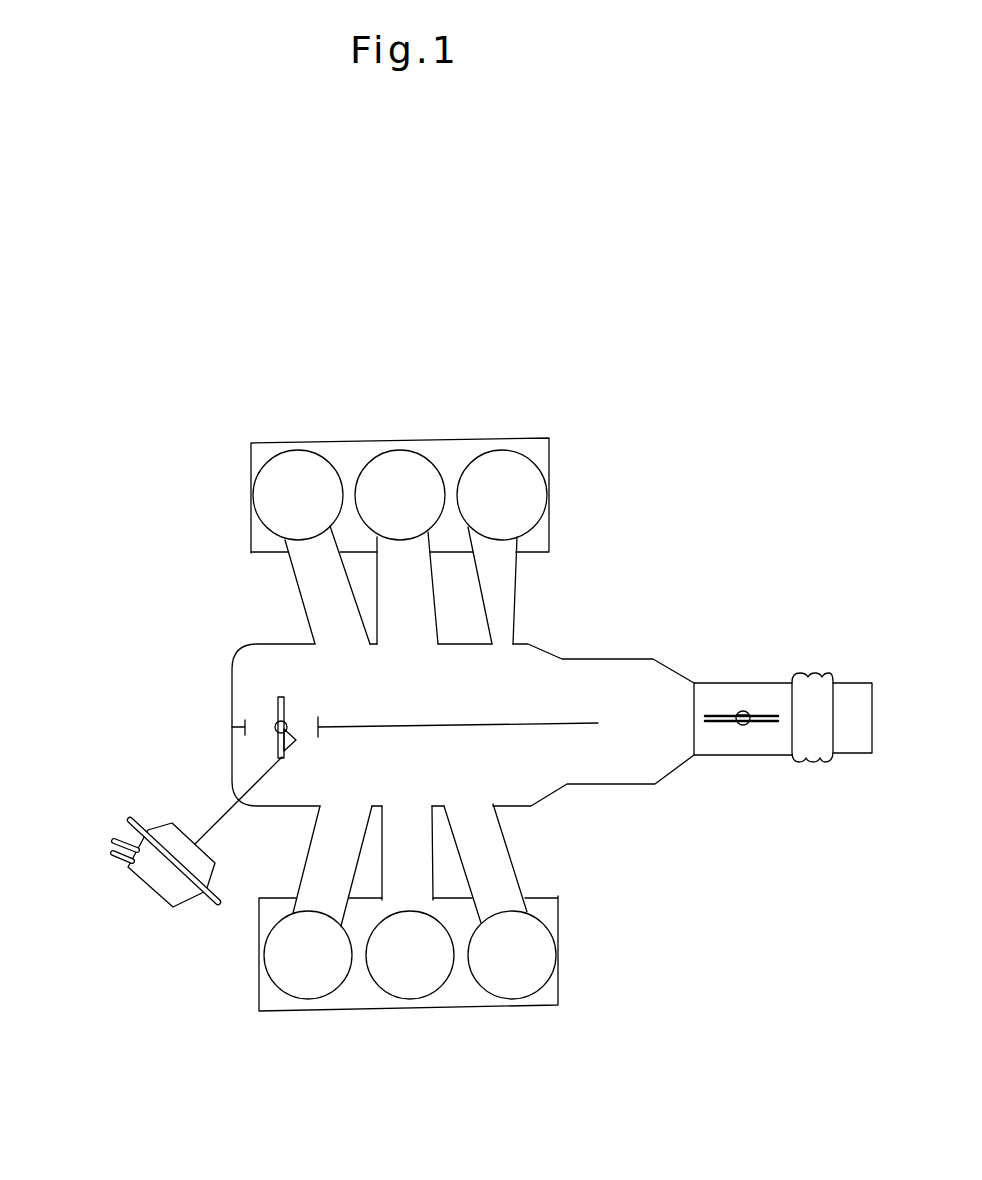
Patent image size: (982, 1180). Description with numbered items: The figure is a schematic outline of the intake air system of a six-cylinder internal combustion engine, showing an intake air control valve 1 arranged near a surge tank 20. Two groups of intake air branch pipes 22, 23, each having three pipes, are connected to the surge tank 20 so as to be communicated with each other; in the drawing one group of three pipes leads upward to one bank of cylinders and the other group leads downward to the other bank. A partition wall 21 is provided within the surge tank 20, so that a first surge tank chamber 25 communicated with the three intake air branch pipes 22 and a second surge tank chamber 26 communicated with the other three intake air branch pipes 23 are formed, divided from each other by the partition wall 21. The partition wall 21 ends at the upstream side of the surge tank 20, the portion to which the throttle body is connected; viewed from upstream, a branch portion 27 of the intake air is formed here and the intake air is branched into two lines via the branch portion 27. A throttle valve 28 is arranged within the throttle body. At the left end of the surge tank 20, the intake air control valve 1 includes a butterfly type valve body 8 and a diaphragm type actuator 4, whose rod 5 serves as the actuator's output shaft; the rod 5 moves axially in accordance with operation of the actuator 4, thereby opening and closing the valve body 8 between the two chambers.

The intake air control valve 1 is at (275, 704).
The diaphragm type actuator 4 is at (160, 822).
The rod 5 is at (222, 810).
The butterfly type valve body 8 is at (259, 703).
The surge tank 20 is at (272, 622).
The partition wall 21 is at (512, 723).
The intake air branch pipes 22 is at (392, 602).
The intake air branch pipes 23 is at (310, 873).
The first surge tank chamber 25 is at (443, 699).
The second surge tank chamber 26 is at (443, 779).
The branch portion 27 is at (657, 722).
The throttle valve 28 is at (758, 704).